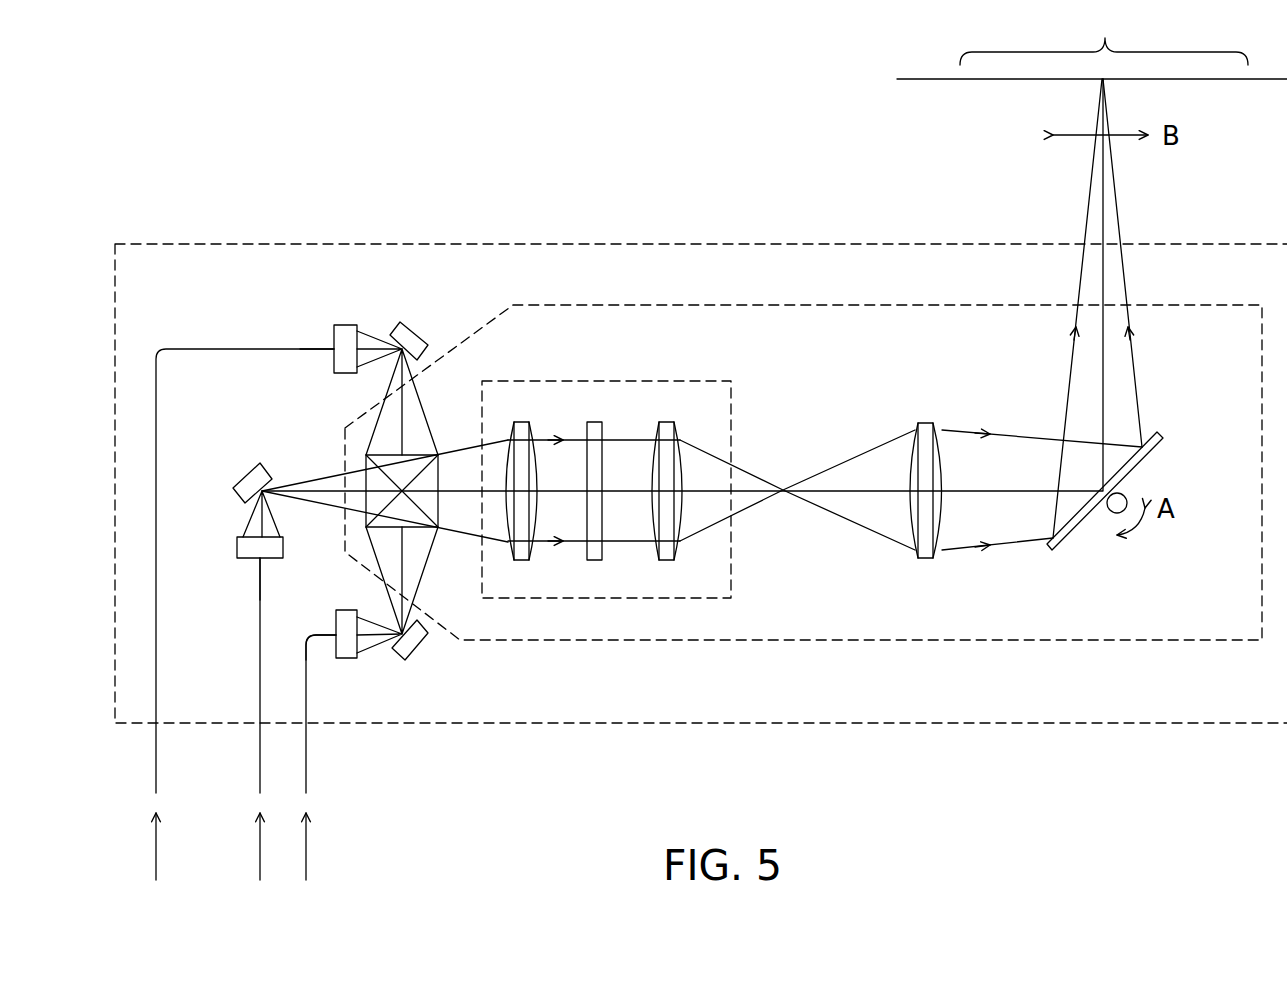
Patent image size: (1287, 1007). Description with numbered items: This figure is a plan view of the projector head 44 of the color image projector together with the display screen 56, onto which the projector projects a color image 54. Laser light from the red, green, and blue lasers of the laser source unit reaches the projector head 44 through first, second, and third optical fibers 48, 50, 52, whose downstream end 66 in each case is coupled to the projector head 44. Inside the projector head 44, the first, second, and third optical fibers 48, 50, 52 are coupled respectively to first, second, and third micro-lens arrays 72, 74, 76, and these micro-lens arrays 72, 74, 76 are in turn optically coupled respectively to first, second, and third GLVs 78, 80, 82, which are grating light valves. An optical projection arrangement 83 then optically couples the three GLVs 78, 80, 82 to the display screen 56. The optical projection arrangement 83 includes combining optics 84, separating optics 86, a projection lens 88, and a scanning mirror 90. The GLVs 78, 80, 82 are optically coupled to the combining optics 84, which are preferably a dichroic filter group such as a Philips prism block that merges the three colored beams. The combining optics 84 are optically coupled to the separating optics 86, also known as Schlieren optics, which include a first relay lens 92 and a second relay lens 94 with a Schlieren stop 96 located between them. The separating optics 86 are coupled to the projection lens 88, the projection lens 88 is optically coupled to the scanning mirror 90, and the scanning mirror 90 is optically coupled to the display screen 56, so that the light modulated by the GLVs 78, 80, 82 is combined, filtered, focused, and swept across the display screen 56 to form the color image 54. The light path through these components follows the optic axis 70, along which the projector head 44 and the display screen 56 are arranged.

The projector head 44 is at (937, 723).
The first optical fiber 48 is at (156, 767).
The second optical fiber 50 is at (259, 767).
The third optical fiber 52 is at (307, 767).
The color image 54 is at (1104, 36).
The display screen 56 is at (945, 79).
The downstream end 66 is at (307, 347).
The optic axis 70 is at (370, 347).
The first micro-lens array 72 is at (343, 323).
The second micro-lens array 74 is at (237, 552).
The third micro-lens array 76 is at (345, 660).
The first GLV 78 is at (415, 323).
The second GLV 80 is at (257, 470).
The third GLV 82 is at (410, 655).
The optical projection arrangement 83 is at (853, 640).
The combining optics 84 is at (418, 450).
The separating optics 86 is at (587, 376).
The projection lens 88 is at (925, 420).
The scanning mirror 90 is at (1148, 437).
The first relay lens 92 is at (523, 420).
The second relay lens 94 is at (672, 420).
The Schlieren stop 96 is at (603, 402).